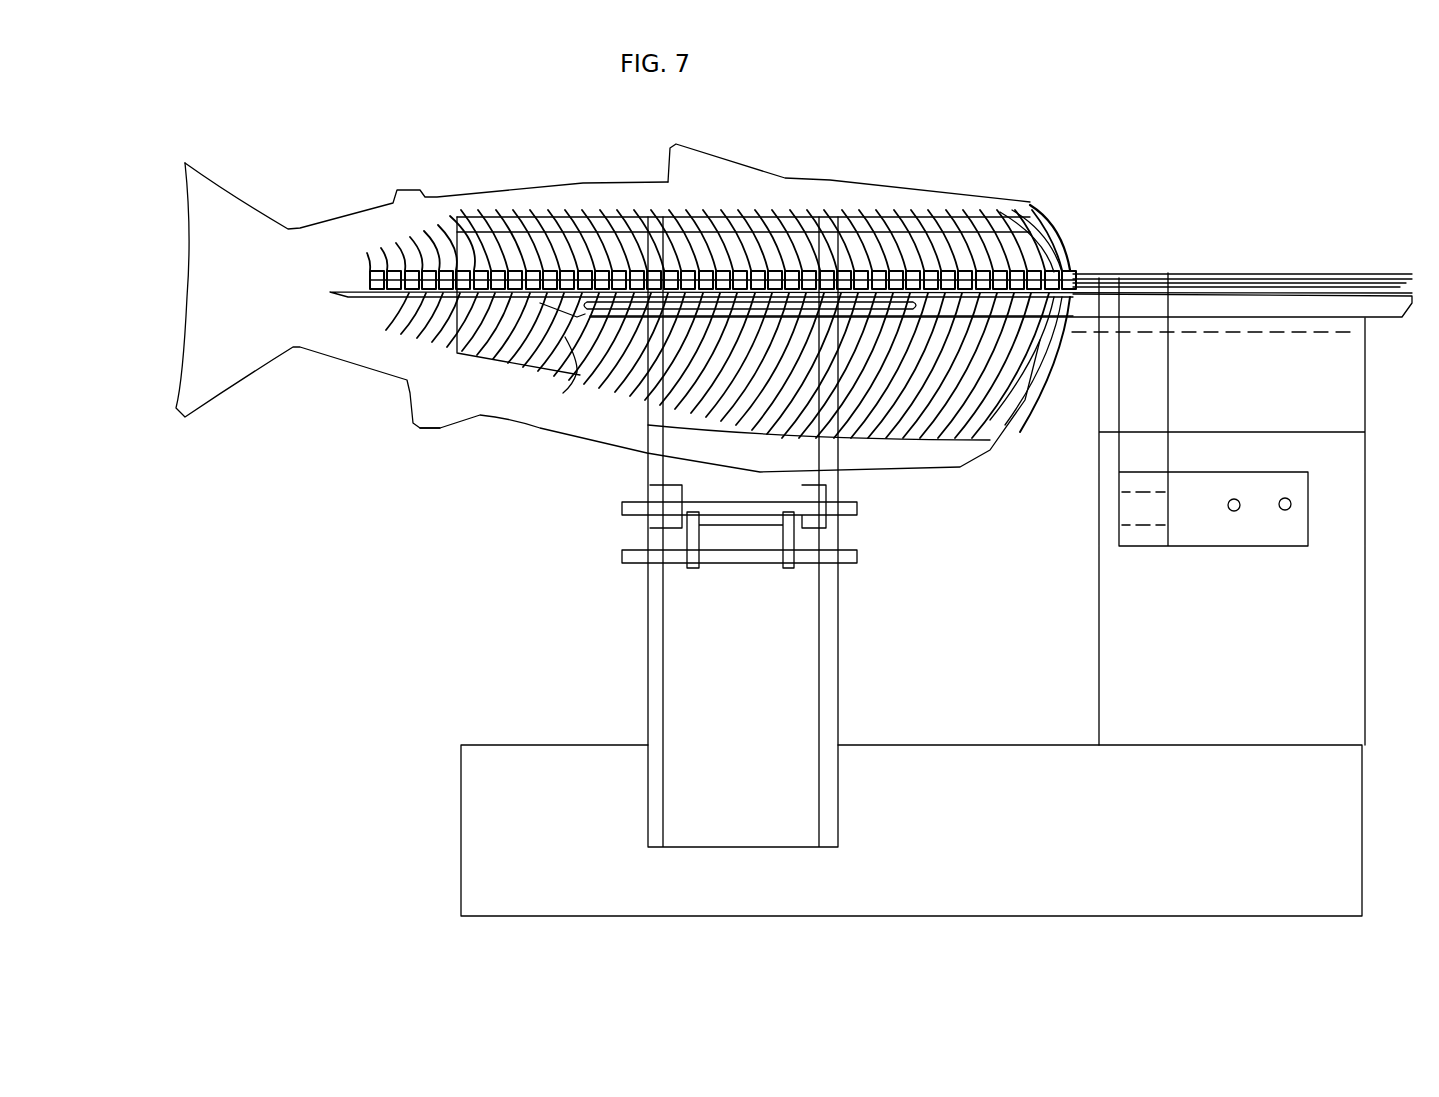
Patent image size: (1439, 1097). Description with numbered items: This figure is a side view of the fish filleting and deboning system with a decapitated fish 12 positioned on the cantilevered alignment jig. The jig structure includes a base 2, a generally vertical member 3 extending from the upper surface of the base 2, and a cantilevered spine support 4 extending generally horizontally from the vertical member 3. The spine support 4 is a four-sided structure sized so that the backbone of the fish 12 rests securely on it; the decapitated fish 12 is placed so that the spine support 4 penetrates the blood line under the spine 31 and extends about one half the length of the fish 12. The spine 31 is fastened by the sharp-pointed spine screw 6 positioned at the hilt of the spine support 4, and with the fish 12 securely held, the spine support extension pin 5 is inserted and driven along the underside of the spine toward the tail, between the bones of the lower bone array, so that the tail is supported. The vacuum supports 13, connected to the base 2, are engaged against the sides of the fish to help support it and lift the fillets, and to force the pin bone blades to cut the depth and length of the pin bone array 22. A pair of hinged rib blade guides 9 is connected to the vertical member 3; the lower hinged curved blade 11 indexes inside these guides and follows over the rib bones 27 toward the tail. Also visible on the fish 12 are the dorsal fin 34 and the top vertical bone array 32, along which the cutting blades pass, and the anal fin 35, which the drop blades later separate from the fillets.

The base 2 is at (1033, 745).
The vertical member 3 is at (1365, 580).
The spine support 4 is at (752, 325).
The spine support extension pin 5 is at (342, 294).
The spine screw 6 is at (1067, 272).
The hinged rib blade guides 9 is at (1152, 400).
The lower hinged curved blade 11 is at (561, 355).
The fish 12 is at (280, 191).
The vacuum supports 13 is at (463, 352).
The pin bone array 22 is at (1047, 253).
The rib bones 27 is at (1007, 372).
The spine 31 is at (980, 277).
The top vertical bone array 32 is at (505, 238).
The dorsal fin 34 is at (730, 152).
The anal fin 35 is at (400, 428).